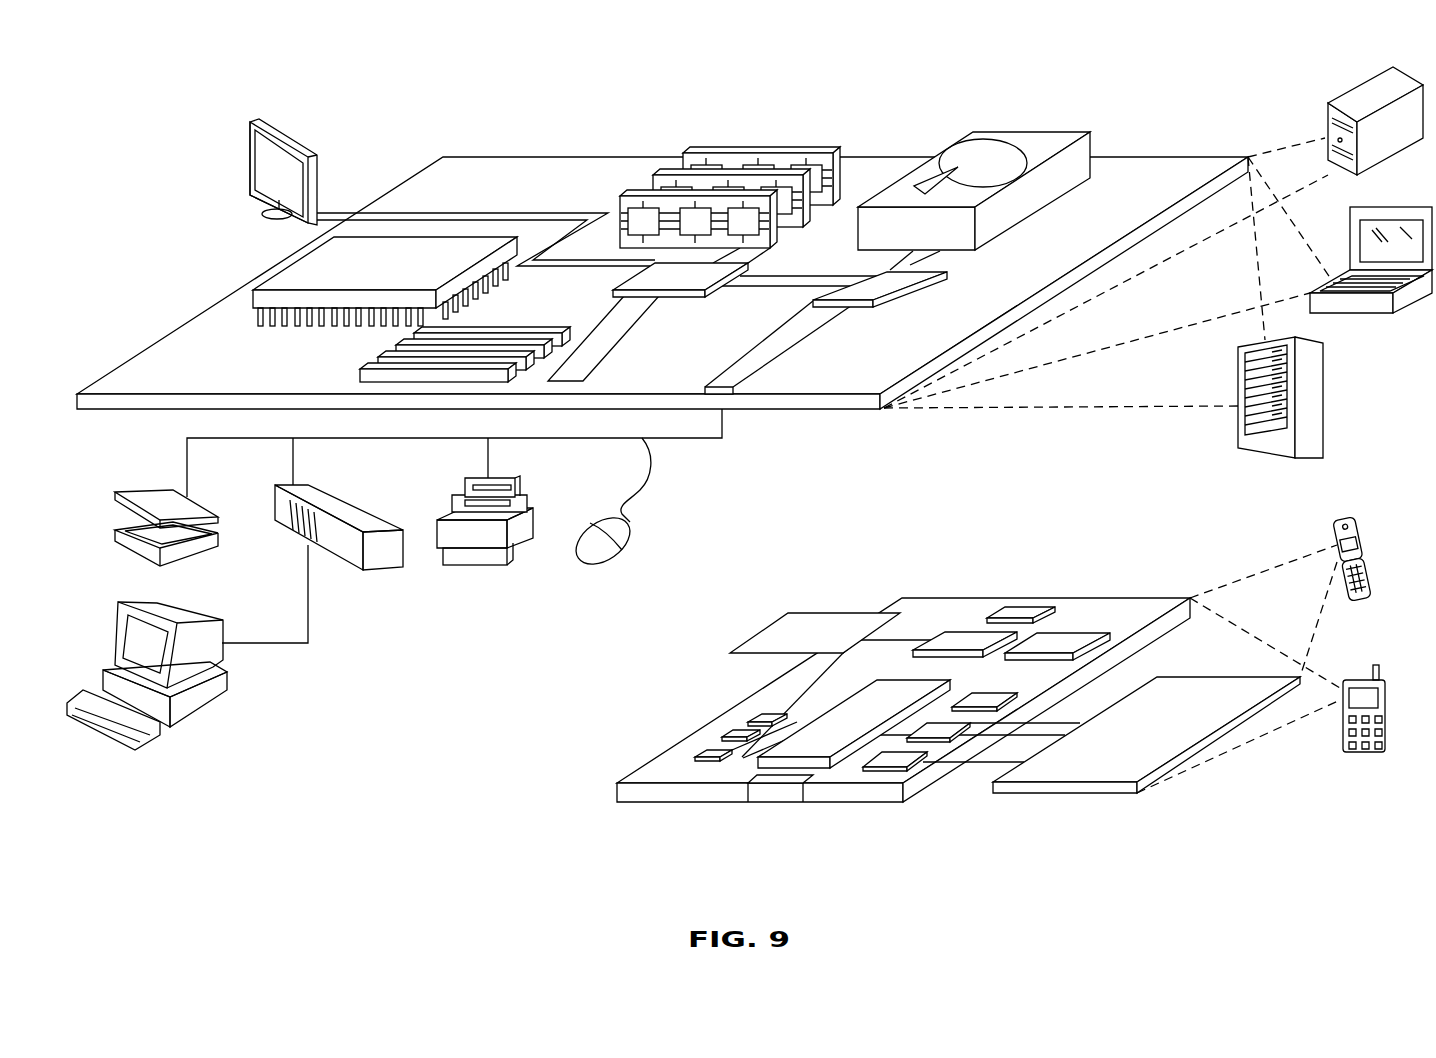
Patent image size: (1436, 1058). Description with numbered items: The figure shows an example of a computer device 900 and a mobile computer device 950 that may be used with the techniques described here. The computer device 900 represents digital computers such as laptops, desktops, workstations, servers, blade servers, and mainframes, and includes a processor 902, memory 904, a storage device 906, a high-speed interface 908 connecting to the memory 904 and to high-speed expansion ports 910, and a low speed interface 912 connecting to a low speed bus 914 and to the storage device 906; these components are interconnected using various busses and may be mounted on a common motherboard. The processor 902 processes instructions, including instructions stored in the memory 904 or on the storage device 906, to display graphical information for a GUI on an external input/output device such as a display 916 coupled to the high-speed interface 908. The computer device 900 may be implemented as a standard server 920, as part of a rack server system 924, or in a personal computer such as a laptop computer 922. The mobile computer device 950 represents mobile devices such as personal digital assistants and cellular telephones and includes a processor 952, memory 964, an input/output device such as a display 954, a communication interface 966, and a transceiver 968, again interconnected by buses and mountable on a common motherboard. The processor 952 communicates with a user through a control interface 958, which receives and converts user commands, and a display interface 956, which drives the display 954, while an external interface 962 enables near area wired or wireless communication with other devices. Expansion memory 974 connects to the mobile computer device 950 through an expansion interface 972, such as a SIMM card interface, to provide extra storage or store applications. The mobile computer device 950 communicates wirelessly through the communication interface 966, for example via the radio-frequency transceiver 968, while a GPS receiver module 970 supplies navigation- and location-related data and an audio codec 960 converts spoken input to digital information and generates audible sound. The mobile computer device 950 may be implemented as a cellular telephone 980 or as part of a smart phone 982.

The computer device 900 is at (393, 95).
The processor 902 is at (279, 268).
The memory 904 is at (770, 152).
The storage device 906 is at (1020, 130).
The high-speed interface 908 is at (692, 274).
The high-speed expansion ports 910 is at (388, 352).
The low speed interface 912 is at (851, 283).
The low speed bus 914 is at (724, 384).
The display 916 is at (256, 120).
The standard server 920 is at (1352, 99).
The laptop computer 922 is at (1412, 206).
The rack server system 924 is at (1325, 400).
The mobile computer device 950 is at (571, 809).
The processor 952 is at (820, 730).
The display 954 is at (1188, 696).
The display interface 956 is at (905, 758).
The control interface 958 is at (947, 730).
The audio codec 960 is at (988, 698).
The external interface 962 is at (777, 786).
The memory 964 is at (722, 736).
The communication interface 966 is at (965, 635).
The transceiver 968 is at (1062, 635).
The GPS receiver module 970 is at (1022, 605).
The expansion interface 972 is at (880, 612).
The expansion memory 974 is at (790, 611).
The cellular telephone 980 is at (1350, 517).
The smart phone 982 is at (1358, 677).